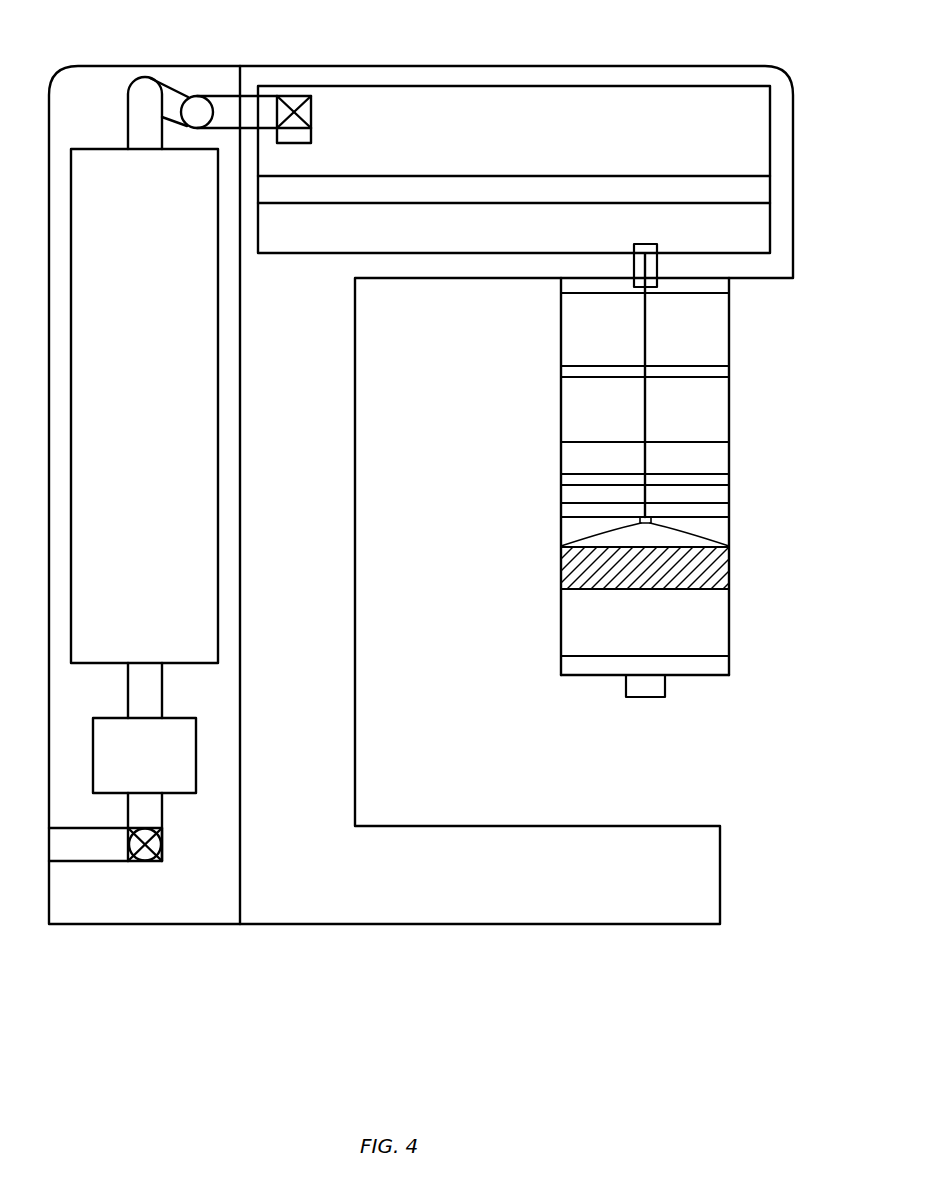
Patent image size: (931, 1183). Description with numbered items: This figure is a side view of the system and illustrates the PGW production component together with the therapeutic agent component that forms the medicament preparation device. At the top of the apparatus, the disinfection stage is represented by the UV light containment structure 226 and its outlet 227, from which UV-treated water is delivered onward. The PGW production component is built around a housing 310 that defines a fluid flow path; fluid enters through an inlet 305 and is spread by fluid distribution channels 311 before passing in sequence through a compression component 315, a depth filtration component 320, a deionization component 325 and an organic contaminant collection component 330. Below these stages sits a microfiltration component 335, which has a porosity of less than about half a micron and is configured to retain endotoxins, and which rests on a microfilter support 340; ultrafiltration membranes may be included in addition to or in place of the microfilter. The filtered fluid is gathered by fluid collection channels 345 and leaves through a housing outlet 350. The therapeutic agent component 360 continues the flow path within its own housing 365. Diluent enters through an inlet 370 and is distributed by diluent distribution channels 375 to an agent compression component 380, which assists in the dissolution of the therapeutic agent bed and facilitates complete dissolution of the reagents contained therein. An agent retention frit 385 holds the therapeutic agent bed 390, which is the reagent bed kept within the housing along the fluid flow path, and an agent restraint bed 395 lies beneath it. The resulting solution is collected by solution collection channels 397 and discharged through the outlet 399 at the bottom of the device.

The UV light containment structure 226 is at (598, 175).
The outlet 227 is at (636, 246).
The inlet 305 is at (305, 131).
The housing 310 is at (560, 67).
The fluid distribution channels 311 is at (593, 285).
The compression component 315 is at (697, 340).
The depth filtration component 320 is at (697, 371).
The deionization component 325 is at (697, 421).
The organic contaminant collection component 330 is at (697, 460).
The microfiltration component 335 is at (590, 473).
The microfilter support 340 is at (593, 486).
The fluid collection channels 345 is at (593, 507).
The housing outlet 350 is at (705, 537).
The therapeutic agent component 360 is at (593, 622).
The housing 365 is at (603, 677).
The inlet 370 is at (585, 542).
The diluent distribution channels 375 is at (697, 491).
The agent compression component 380 is at (697, 565).
The agent retention frit 385 is at (697, 591).
The therapeutic agent bed 390 is at (697, 623).
The agent restraint bed 395 is at (697, 655).
The solution collection channels 397 is at (570, 663).
The outlet 399 is at (653, 697).